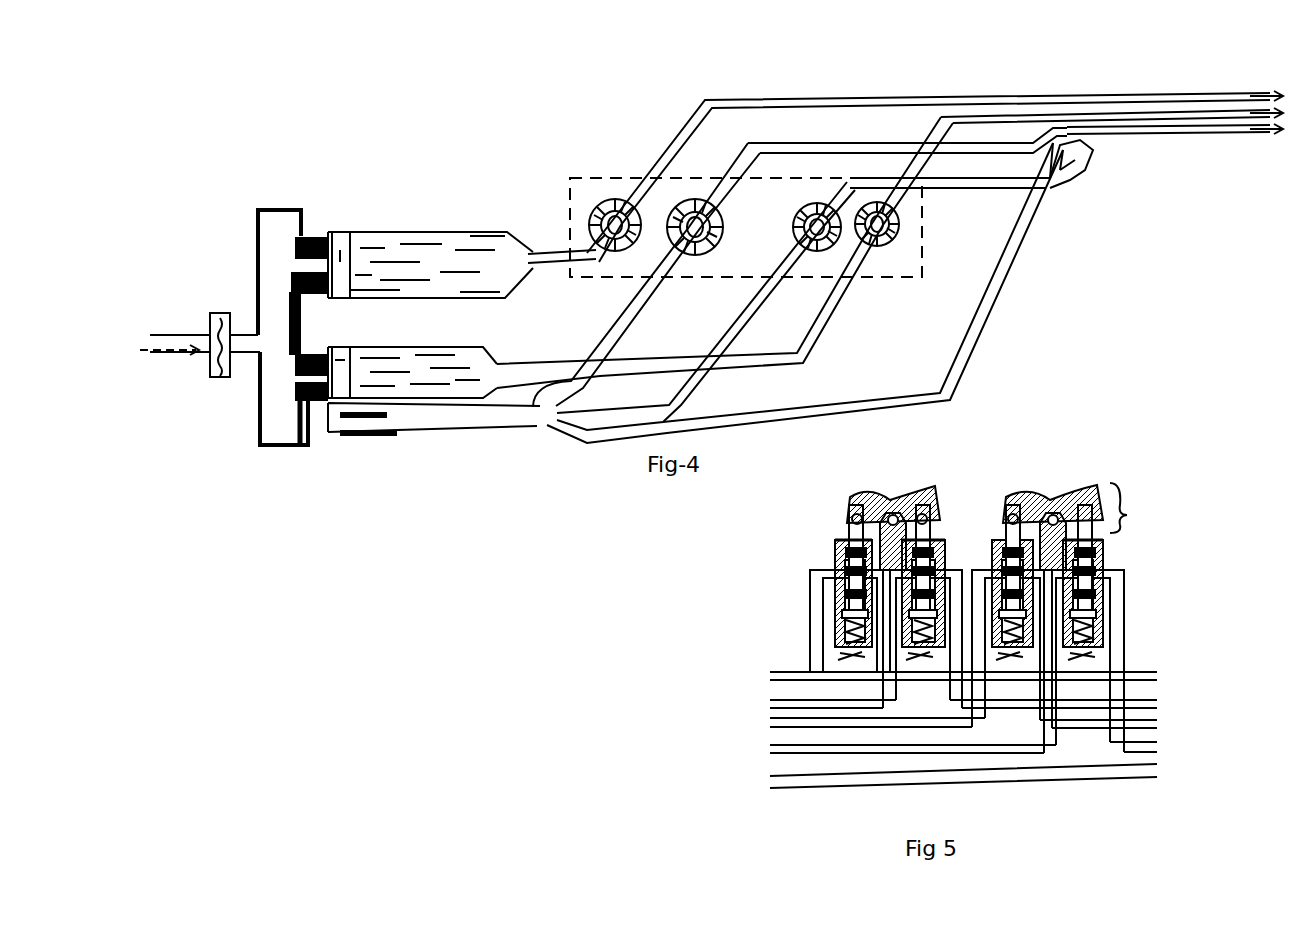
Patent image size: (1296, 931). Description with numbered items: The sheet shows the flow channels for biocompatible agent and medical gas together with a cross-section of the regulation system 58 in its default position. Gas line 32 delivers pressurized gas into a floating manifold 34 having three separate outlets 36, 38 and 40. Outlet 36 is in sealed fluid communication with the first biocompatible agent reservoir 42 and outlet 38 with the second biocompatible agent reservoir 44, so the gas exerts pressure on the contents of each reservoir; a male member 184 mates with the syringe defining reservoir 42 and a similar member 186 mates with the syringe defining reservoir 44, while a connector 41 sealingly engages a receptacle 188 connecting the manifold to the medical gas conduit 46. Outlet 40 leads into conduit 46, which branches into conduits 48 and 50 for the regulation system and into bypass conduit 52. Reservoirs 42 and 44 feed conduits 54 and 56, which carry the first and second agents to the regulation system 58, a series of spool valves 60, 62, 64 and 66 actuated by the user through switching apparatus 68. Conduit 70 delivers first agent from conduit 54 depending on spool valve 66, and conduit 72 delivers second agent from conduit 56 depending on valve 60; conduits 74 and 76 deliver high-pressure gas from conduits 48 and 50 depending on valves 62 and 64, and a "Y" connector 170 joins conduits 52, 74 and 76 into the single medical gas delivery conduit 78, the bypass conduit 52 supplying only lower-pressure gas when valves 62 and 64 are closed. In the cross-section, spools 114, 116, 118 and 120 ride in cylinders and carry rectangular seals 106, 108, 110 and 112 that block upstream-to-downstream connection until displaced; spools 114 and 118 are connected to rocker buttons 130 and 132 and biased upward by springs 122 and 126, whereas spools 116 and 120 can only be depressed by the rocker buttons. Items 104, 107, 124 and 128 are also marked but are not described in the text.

In FIG. 4, the gas line 32 is at (177, 355).
In FIG. 4, the manifold 34 is at (273, 210).
In FIG. 4, the outlet 36 is at (293, 380).
In FIG. 4, the outlet 38 is at (293, 260).
In FIG. 4, the outlet 40 is at (310, 433).
In FIG. 4, the connector 41 is at (317, 437).
In FIG. 4, the first biocompatible agent reservoir 42 is at (432, 403).
In FIG. 4, the second biocompatible agent reservoir 44 is at (427, 228).
In FIG. 4, the medical gas conduit 46 is at (487, 427).
In FIG. 4, the conduit 48 is at (530, 410).
In FIG. 5, the conduit 48 is at (762, 700).
In FIG. 4, the conduit 50 is at (613, 433).
In FIG. 5, the conduit 50 is at (760, 721).
In FIG. 4, the bypass conduit 52 is at (893, 400).
In FIG. 5, the bypass conduit 52 is at (766, 782).
In FIG. 4, the conduit 54 is at (810, 327).
In FIG. 5, the conduit 54 is at (764, 750).
In FIG. 4, the conduit 56 is at (555, 250).
In FIG. 5, the conduit 56 is at (764, 672).
In FIG. 4, the regulation system 58 is at (585, 178).
In FIG. 5, the regulation system 58 is at (817, 502).
In FIG. 4, the spool valve 60 is at (610, 253).
In FIG. 5, the spool valve 60 is at (853, 676).
In FIG. 4, the spool valve 62 is at (693, 257).
In FIG. 5, the spool valve 62 is at (924, 673).
In FIG. 4, the spool valve 64 is at (812, 255).
In FIG. 5, the spool valve 64 is at (1019, 673).
In FIG. 4, the spool valve 66 is at (877, 248).
In FIG. 5, the spool valve 66 is at (1098, 676).
In FIG. 5, the switching apparatus 68 is at (1137, 508).
In FIG. 4, the conduit 70 is at (1053, 120).
In FIG. 5, the conduit 70 is at (1157, 746).
In FIG. 4, the conduit 72 is at (1150, 97).
In FIG. 5, the conduit 72 is at (1157, 676).
In FIG. 4, the conduit 74 is at (913, 147).
In FIG. 5, the conduit 74 is at (1157, 703).
In FIG. 4, the conduit 76 is at (1060, 190).
In FIG. 5, the conduit 76 is at (1157, 724).
In FIG. 4, the medical gas delivery conduit 78 is at (1163, 135).
In FIG. 4, the check valve 104 is at (227, 378).
In FIG. 5, the rectangular seal 106 is at (847, 570).
In FIG. 4, the plunger 107 is at (343, 237).
In FIG. 5, the rectangular seal 108 is at (957, 566).
In FIG. 5, the rectangular seal 110 is at (990, 570).
In FIG. 5, the rectangular seal 112 is at (1100, 572).
In FIG. 5, the spool 114 is at (847, 532).
In FIG. 5, the spool 116 is at (947, 533).
In FIG. 5, the spool 118 is at (1030, 507).
In FIG. 5, the spool 120 is at (1100, 537).
In FIG. 5, the spring 122 is at (857, 657).
In FIG. 5, the valve seat 124 is at (935, 673).
In FIG. 5, the spring 126 is at (1027, 663).
In FIG. 5, the valve seat 128 is at (1073, 663).
In FIG. 5, the rocker button 130 is at (870, 494).
In FIG. 5, the rocker button 132 is at (1068, 492).
In FIG. 4, the "Y" connector 170 is at (1080, 140).
In FIG. 4, the male member 184 is at (322, 437).
In FIG. 4, the male member 186 is at (323, 234).
In FIG. 4, the receptacle 188 is at (357, 440).